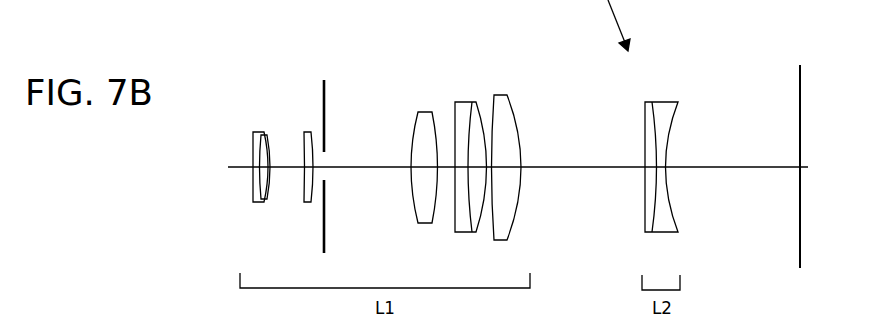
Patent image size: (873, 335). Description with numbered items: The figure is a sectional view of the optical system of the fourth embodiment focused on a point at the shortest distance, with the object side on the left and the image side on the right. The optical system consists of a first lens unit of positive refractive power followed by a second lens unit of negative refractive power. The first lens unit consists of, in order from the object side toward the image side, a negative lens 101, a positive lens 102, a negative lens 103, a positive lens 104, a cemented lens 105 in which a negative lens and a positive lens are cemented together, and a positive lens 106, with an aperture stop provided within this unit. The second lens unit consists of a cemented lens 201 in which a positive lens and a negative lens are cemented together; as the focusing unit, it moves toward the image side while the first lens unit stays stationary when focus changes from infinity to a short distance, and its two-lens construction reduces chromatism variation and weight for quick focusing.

The negative lens 101 is at (262, 131).
The positive lens 102 is at (264, 134).
The negative lens 103 is at (312, 133).
The positive lens 104 is at (422, 111).
The cemented lens 105 is at (490, 95).
The positive lens 106 is at (502, 94).
The cemented lens 201 is at (683, 98).